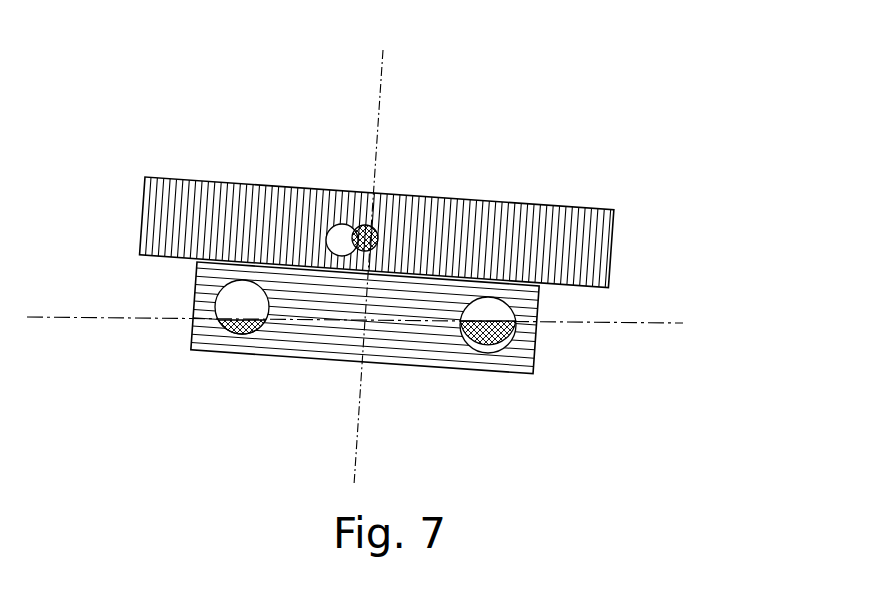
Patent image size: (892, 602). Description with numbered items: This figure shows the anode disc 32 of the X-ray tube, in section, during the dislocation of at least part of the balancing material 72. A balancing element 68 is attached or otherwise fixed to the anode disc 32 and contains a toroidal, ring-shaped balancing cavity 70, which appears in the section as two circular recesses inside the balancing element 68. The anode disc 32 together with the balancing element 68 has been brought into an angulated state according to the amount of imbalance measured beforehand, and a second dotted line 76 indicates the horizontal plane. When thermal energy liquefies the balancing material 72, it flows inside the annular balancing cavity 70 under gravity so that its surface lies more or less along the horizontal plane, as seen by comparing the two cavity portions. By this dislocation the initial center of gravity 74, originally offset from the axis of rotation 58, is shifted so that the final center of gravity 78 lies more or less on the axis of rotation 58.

The anode disc 32 is at (572, 230).
The axis of rotation 58 is at (386, 65).
The balancing element 68 is at (405, 345).
The balancing cavity 70 is at (246, 303).
The balancing material 72 is at (233, 330).
The initial center of gravity 74 is at (341, 225).
The second dotted line 76 is at (657, 322).
The final center of gravity 78 is at (377, 228).